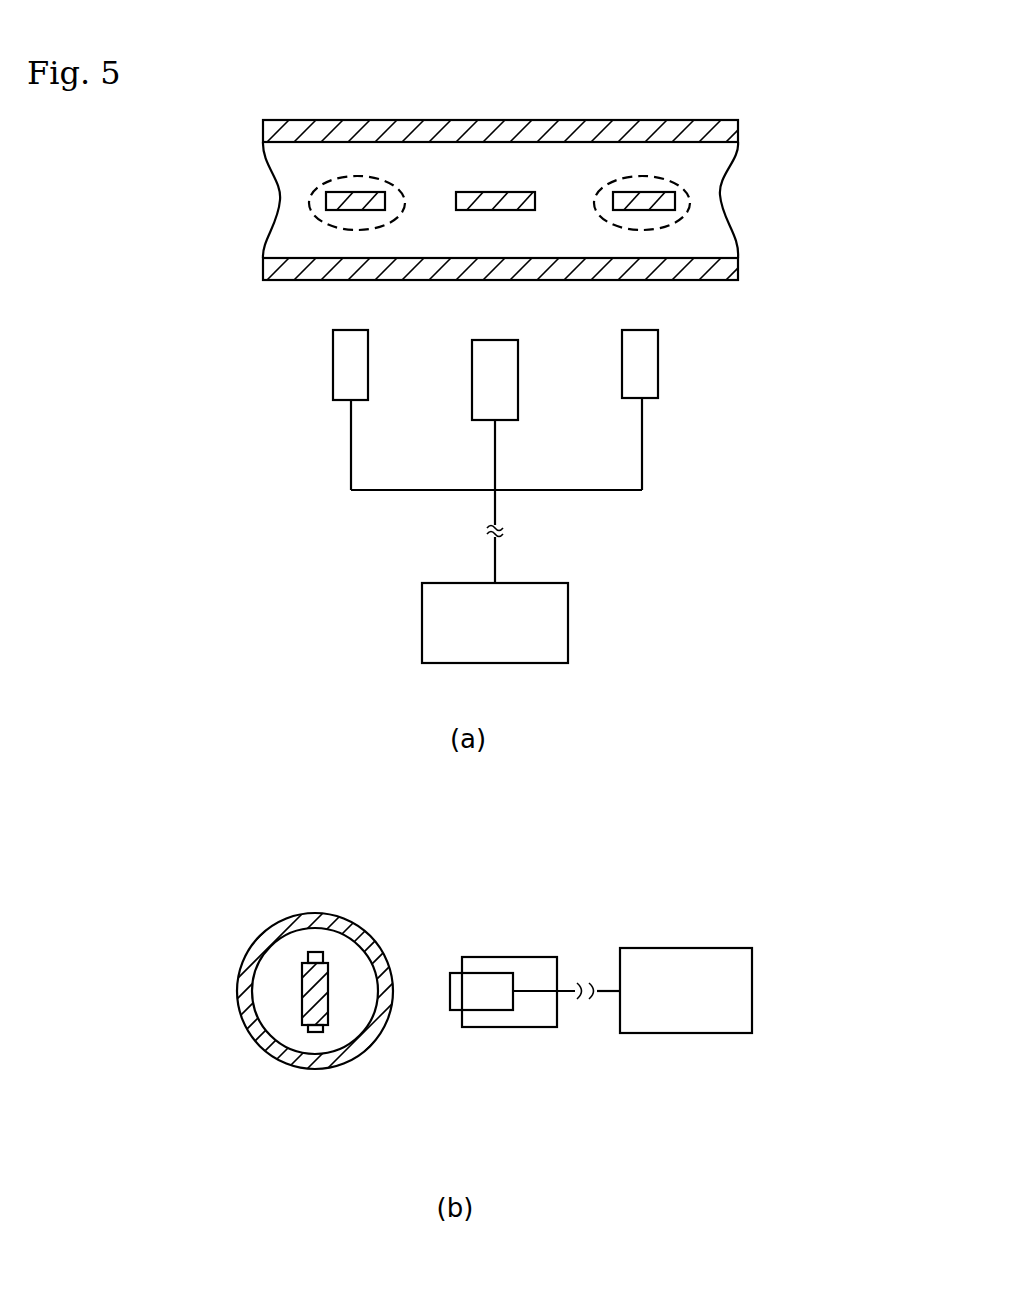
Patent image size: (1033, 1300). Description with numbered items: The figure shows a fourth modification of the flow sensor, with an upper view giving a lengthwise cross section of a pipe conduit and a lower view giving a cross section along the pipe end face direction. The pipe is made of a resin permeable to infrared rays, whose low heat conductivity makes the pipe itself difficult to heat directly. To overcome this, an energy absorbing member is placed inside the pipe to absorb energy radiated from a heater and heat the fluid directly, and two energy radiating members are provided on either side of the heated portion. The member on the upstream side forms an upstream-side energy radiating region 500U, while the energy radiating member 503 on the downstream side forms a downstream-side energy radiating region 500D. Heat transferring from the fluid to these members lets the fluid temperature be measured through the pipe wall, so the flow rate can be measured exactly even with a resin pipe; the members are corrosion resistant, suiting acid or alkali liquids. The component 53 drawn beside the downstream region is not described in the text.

The upstream-side energy radiating region 500U is at (333, 182).
The downstream-side energy radiating region 500D is at (672, 177).
The energy radiating member 503 is at (650, 192).
The downstream detector unit 53 is at (658, 377).